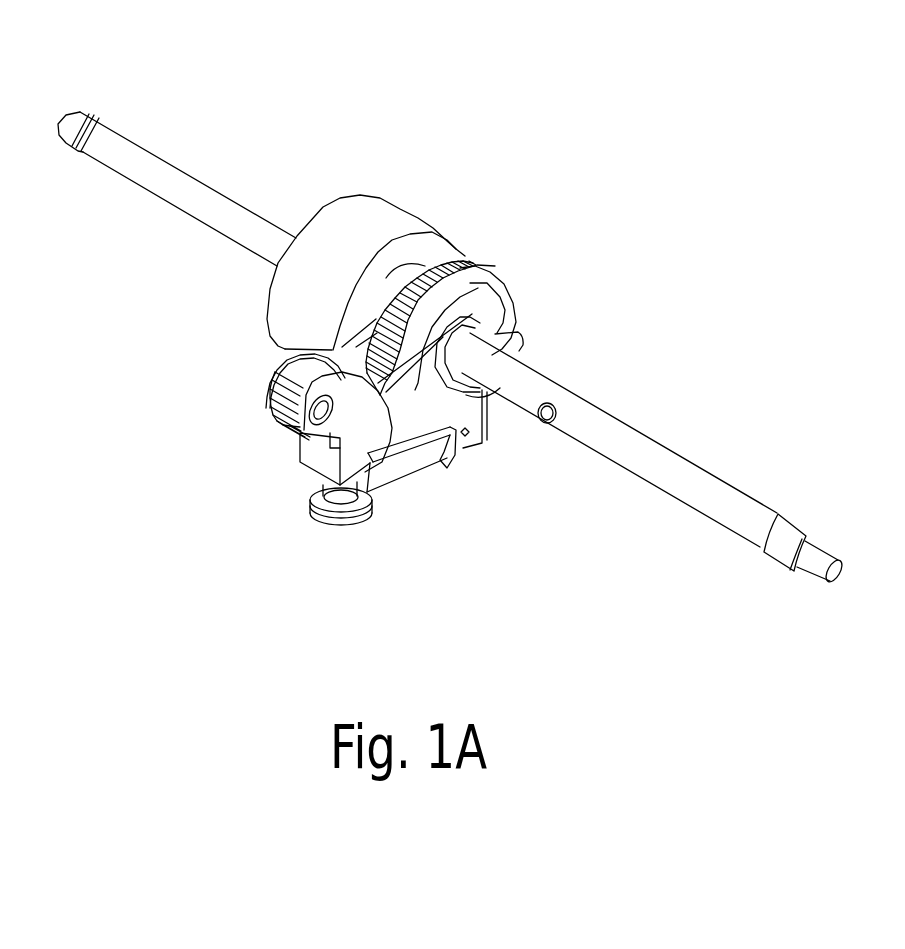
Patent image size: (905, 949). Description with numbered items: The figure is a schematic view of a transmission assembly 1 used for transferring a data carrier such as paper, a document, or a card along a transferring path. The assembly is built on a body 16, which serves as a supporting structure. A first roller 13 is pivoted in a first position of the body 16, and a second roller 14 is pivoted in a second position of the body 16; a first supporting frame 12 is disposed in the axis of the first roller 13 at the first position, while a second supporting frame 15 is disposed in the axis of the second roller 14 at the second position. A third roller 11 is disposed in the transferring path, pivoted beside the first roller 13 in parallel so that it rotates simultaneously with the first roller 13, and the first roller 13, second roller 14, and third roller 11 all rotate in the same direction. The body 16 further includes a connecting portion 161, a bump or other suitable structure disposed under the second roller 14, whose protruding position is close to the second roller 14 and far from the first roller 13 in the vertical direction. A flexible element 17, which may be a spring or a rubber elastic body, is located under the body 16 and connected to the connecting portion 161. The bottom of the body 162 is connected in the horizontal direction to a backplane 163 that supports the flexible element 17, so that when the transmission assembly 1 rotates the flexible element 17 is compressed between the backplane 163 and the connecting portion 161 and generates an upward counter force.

The transmission assembly 1 is at (285, 50).
The third roller 11 is at (325, 208).
The first supporting frame 12 is at (515, 298).
The first roller 13 is at (467, 259).
The second roller 14 is at (270, 393).
The second supporting frame 15 is at (306, 420).
The body 16 is at (359, 413).
The connecting portion 161 is at (305, 462).
The bottom of the body 162 is at (482, 422).
The backplane 163 is at (390, 492).
The flexible element 17 is at (320, 487).